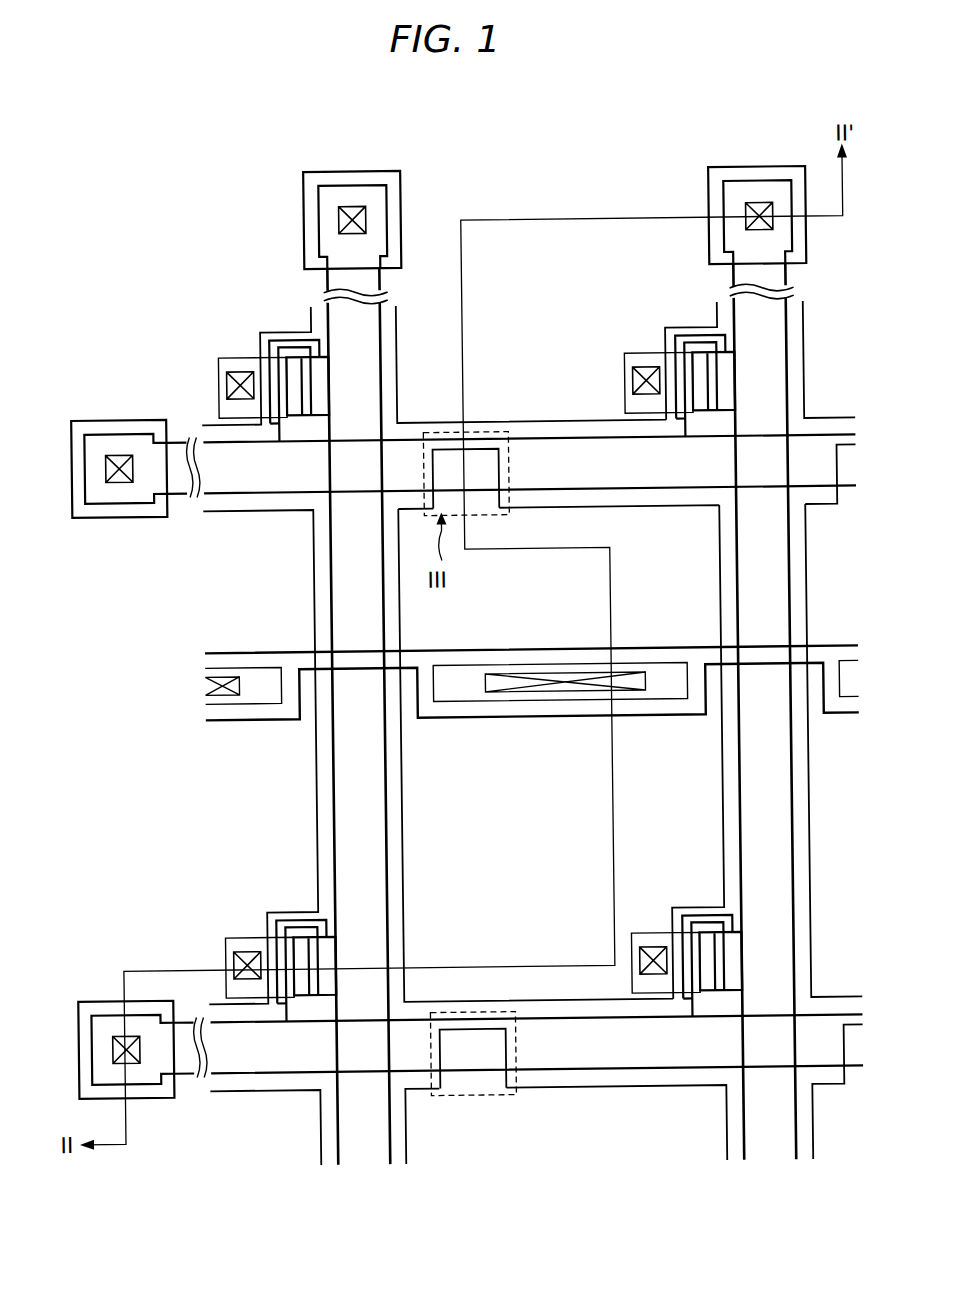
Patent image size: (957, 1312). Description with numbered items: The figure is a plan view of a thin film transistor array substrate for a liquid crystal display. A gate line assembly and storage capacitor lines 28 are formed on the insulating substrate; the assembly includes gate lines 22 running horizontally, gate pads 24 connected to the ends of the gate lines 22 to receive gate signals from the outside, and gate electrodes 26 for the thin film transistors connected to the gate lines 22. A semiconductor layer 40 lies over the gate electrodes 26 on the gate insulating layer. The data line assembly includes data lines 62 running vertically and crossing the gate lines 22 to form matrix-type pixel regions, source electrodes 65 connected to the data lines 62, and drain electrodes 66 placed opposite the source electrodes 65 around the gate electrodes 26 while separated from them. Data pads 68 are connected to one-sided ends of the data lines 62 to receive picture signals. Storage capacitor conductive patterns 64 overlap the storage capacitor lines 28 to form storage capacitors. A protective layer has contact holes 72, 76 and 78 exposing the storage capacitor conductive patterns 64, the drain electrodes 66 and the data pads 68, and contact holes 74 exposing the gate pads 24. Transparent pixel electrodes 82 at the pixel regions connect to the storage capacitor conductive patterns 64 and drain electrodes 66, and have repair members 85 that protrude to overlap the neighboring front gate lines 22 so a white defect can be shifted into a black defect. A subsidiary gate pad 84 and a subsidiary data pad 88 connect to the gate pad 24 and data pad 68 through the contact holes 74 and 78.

The gate line 22 is at (679, 491).
The gate pad 24 is at (148, 1082).
The gate electrode 26 is at (298, 918).
The storage capacitor line 28 is at (470, 718).
The semiconductor layer 40 is at (326, 981).
The data line 62 is at (331, 742).
The storage capacitor conductive pattern 64 is at (541, 702).
The source electrode 65 is at (307, 996).
The drain electrode 66 is at (222, 944).
The data pad 68 is at (797, 236).
The contact hole 72 is at (567, 674).
The contact hole 74 is at (108, 1046).
The contact hole 76 is at (243, 949).
The contact hole 78 is at (762, 206).
The pixel electrode 82 is at (400, 538).
The subsidiary gate pad 84 is at (86, 997).
The repair member 85 is at (487, 449).
The subsidiary data pad 88 is at (714, 200).